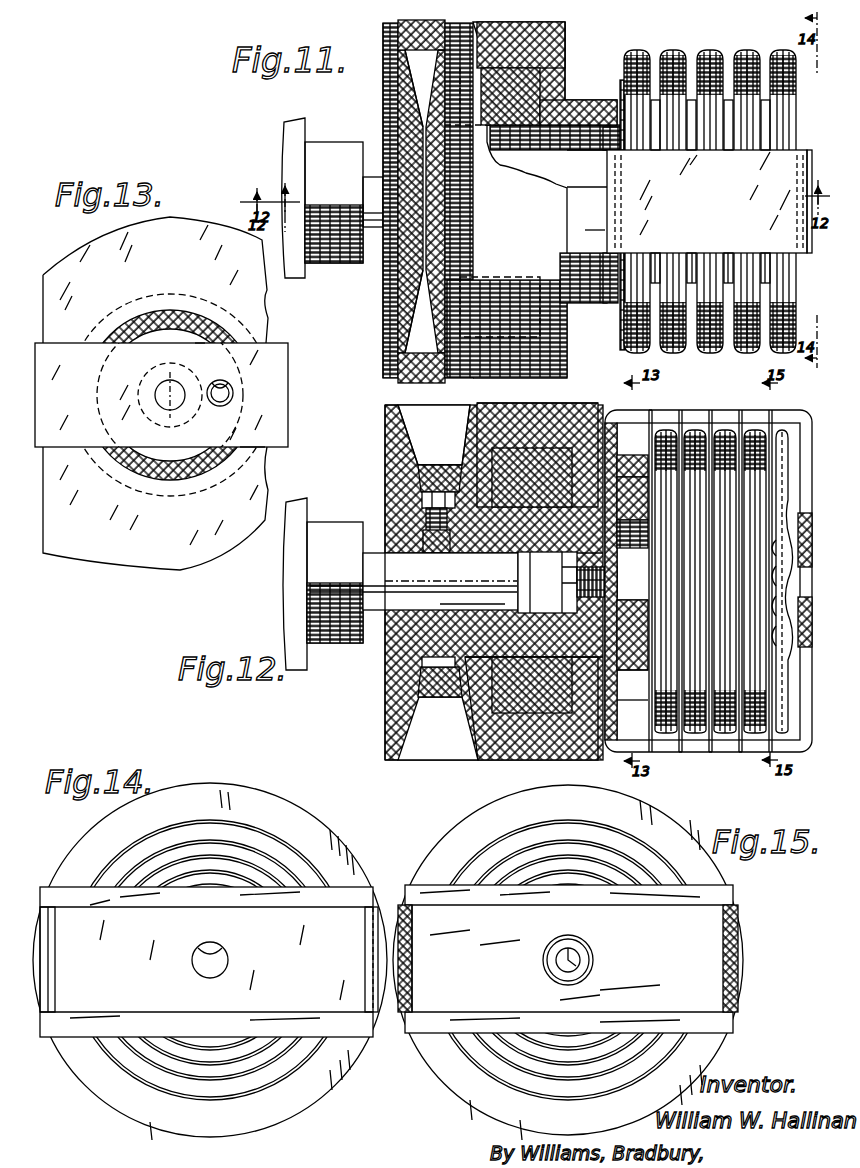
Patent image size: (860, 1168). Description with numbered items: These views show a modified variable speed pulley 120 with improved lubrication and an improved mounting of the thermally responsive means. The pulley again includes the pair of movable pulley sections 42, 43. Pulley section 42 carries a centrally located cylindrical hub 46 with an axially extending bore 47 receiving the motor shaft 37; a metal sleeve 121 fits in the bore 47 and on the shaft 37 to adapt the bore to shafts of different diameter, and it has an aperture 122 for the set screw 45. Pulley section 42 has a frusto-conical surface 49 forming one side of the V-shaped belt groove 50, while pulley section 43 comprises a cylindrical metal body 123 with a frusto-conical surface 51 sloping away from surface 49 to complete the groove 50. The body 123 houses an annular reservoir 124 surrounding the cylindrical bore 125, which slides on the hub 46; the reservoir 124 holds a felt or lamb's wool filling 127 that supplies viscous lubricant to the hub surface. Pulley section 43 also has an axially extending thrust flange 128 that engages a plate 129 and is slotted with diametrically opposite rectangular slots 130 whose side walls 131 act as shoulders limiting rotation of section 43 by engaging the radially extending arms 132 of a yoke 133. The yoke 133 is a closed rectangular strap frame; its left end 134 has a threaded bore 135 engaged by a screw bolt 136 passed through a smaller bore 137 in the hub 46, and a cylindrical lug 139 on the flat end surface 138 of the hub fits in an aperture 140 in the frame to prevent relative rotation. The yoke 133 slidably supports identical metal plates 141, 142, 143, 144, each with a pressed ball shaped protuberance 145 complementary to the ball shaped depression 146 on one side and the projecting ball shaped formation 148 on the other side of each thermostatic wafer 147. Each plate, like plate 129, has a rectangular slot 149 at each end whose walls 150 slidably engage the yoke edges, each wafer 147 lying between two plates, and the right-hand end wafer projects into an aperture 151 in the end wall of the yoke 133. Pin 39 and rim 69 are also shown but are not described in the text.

In FIG. 11, the motor shaft 37 is at (379, 228).
In FIG. 12, the motor shaft 37 is at (378, 618).
In FIG. 13, the pin 39 is at (236, 397).
In FIG. 11, the pulley section 42 is at (383, 88).
In FIG. 12, the pulley section 42 is at (394, 452).
In FIG. 11, the pulley section 43 is at (470, 44).
In FIG. 13, the pulley section 43 is at (224, 288).
In FIG. 12, the pulley section 43 is at (572, 424).
In FIG. 14, the pulley section 43 is at (247, 800).
In FIG. 15, the pulley section 43 is at (712, 1043).
In FIG. 12, the set screw 45 is at (447, 490).
In FIG. 11, the cylindrical hub 46 is at (508, 272).
In FIG. 12, the cylindrical hub 46 is at (486, 540).
In FIG. 12, the bore 47 is at (450, 605).
In FIG. 12, the frusto-conical surface 49 is at (405, 447).
In FIG. 11, the belt groove 50 is at (418, 62).
In FIG. 12, the belt groove 50 is at (428, 452).
In FIG. 11, the frusto-conical surface 51 is at (440, 30).
In FIG. 12, the frusto-conical surface 51 is at (468, 450).
In FIG. 12, the rim 69 is at (398, 404).
In FIG. 11, the variable speed pulley 120 is at (382, 122).
In FIG. 12, the variable speed pulley 120 is at (382, 742).
In FIG. 12, the metal sleeve 121 is at (425, 545).
In FIG. 12, the aperture 122 is at (408, 540).
In FIG. 11, the cylindrical metal body 123 is at (512, 45).
In FIG. 12, the cylindrical metal body 123 is at (528, 418).
In FIG. 11, the annular reservoir 124 is at (560, 80).
In FIG. 12, the annular reservoir 124 is at (618, 450).
In FIG. 11, the cylindrical bore 125 is at (398, 306).
In FIG. 12, the cylindrical bore 125 is at (586, 505).
In FIG. 11, the felt or lamb's wool filling 127 is at (558, 42).
In FIG. 12, the felt or lamb's wool filling 127 is at (488, 740).
In FIG. 11, the thrust flange 128 is at (566, 105).
In FIG. 13, the thrust flange 128 is at (262, 340).
In FIG. 12, the thrust flange 128 is at (638, 650).
In FIG. 11, the plate 129 is at (622, 95).
In FIG. 12, the plate 129 is at (655, 738).
In FIG. 11, the rectangular slot 130 is at (585, 252).
In FIG. 13, the rectangular slot 130 is at (108, 330).
In FIG. 11, the side walls 131 is at (578, 232).
In FIG. 12, the radially extending arms 132 is at (633, 714).
In FIG. 11, the yoke 133 is at (734, 202).
In FIG. 13, the yoke 133 is at (161, 395).
In FIG. 12, the yoke 133 is at (790, 420).
In FIG. 14, the yoke 133 is at (314, 985).
In FIG. 15, the yoke 133 is at (760, 948).
In FIG. 13, the left end 134 is at (275, 430).
In FIG. 12, the left end 134 is at (633, 681).
In FIG. 12, the threaded bore 135 is at (633, 609).
In FIG. 13, the screw bolt 136 is at (164, 388).
In FIG. 12, the screw bolt 136 is at (603, 605).
In FIG. 12, the smaller bore 137 is at (592, 565).
In FIG. 13, the flat end surface 138 is at (245, 450).
In FIG. 12, the flat end surface 138 is at (626, 550).
In FIG. 12, the cylindrical lug 139 is at (615, 520).
In FIG. 13, the aperture 140 is at (232, 390).
In FIG. 12, the aperture 140 is at (612, 478).
In FIG. 11, the metal plate 141 is at (658, 272).
In FIG. 12, the metal plate 141 is at (682, 738).
In FIG. 11, the metal plate 142 is at (692, 268).
In FIG. 12, the metal plate 142 is at (710, 738).
In FIG. 11, the metal plate 143 is at (735, 268).
In FIG. 12, the metal plate 143 is at (742, 738).
In FIG. 11, the metal plate 144 is at (782, 272).
In FIG. 12, the metal plate 144 is at (790, 738).
In FIG. 15, the metal plate 144 is at (700, 890).
In FIG. 12, the ball shaped protuberance 145 is at (770, 642).
In FIG. 15, the ball shaped protuberance 145 is at (586, 975).
In FIG. 12, the ball shaped depression 146 is at (762, 570).
In FIG. 15, the ball shaped depression 146 is at (586, 960).
In FIG. 11, the thermostatic wafer 147 is at (745, 52).
In FIG. 12, the thermostatic wafer 147 is at (722, 440).
In FIG. 14, the thermostatic wafer 147 is at (253, 835).
In FIG. 15, the thermostatic wafer 147 is at (667, 868).
In FIG. 12, the ball shaped formation 148 is at (766, 540).
In FIG. 14, the rectangular slot 149 is at (378, 1030).
In FIG. 15, the rectangular slot 149 is at (401, 912).
In FIG. 14, the walls 150 is at (50, 912).
In FIG. 15, the walls 150 is at (420, 895).
In FIG. 12, the aperture 151 is at (770, 612).
In FIG. 14, the aperture 151 is at (217, 950).